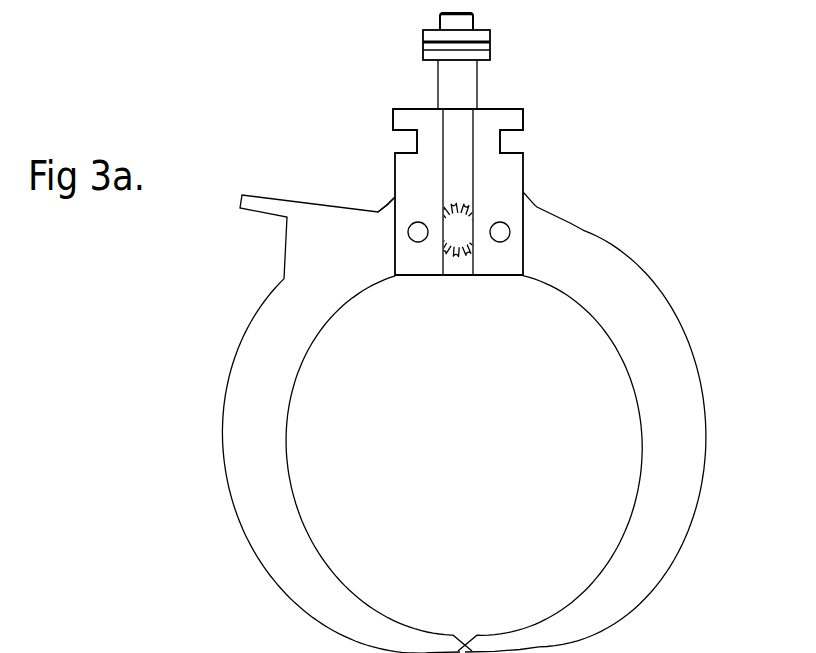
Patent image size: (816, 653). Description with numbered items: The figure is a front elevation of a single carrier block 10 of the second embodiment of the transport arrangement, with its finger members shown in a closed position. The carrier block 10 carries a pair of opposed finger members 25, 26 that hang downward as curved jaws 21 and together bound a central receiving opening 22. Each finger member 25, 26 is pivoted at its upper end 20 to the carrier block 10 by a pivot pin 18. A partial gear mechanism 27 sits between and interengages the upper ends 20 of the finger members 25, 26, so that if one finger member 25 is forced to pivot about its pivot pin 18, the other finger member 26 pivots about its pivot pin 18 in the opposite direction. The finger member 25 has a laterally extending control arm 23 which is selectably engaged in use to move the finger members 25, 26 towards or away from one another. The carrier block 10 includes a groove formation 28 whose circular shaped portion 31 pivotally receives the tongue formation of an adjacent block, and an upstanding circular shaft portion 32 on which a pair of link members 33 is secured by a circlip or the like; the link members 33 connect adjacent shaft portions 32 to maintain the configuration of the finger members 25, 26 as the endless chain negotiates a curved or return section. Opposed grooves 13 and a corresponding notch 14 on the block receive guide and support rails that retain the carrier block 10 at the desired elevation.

The carrier block 10 is at (512, 180).
The opposed groove 13 is at (505, 142).
The left clamp half 14 is at (407, 148).
The pivot pin 18 is at (413, 233).
The upper end 20 is at (383, 212).
The clamping jaw 21 is at (362, 623).
The receiving opening 22 is at (491, 443).
The control arm 23 is at (278, 208).
The finger member 25 is at (248, 372).
The finger member 26 is at (663, 353).
The partial gear mechanism 27 is at (458, 272).
The groove formation 28 is at (445, 138).
The circular shaped portion 31 is at (457, 160).
The upstanding circular shaft portion 32 is at (452, 93).
The link member 33 is at (435, 53).